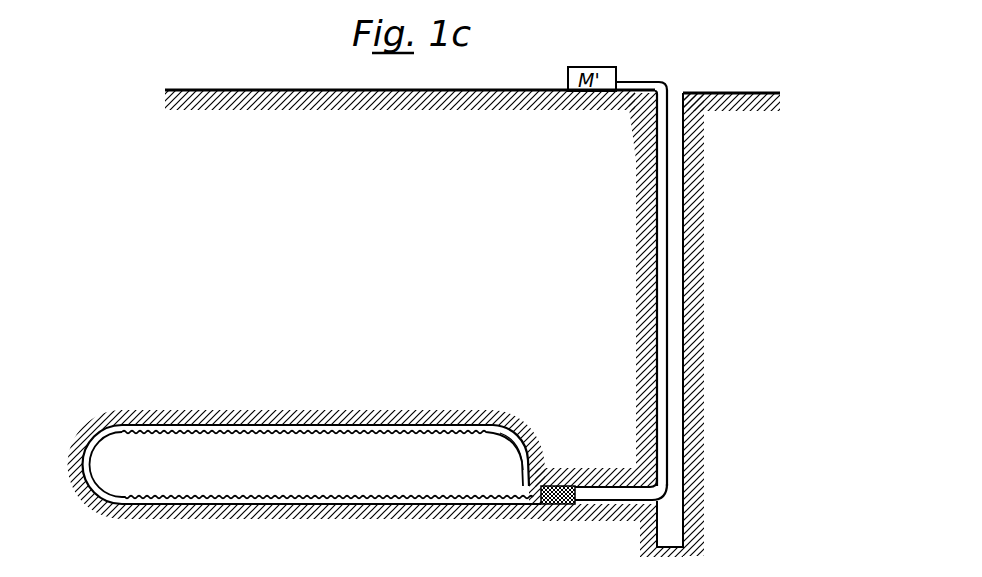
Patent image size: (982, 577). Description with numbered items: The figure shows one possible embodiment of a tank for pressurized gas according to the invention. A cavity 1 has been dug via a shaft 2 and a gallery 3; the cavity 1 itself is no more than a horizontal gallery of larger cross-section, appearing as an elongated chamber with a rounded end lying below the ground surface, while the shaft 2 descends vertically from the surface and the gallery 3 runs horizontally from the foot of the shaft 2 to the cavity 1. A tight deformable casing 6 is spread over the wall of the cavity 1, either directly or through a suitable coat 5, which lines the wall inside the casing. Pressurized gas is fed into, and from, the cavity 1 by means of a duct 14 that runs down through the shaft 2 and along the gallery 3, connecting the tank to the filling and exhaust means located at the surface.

The cavity 1 is at (348, 425).
The shaft 2 is at (680, 229).
The gallery 3 is at (603, 488).
The coat 5 is at (440, 428).
The tight deformable casing 6 is at (498, 433).
The duct 14 is at (667, 275).